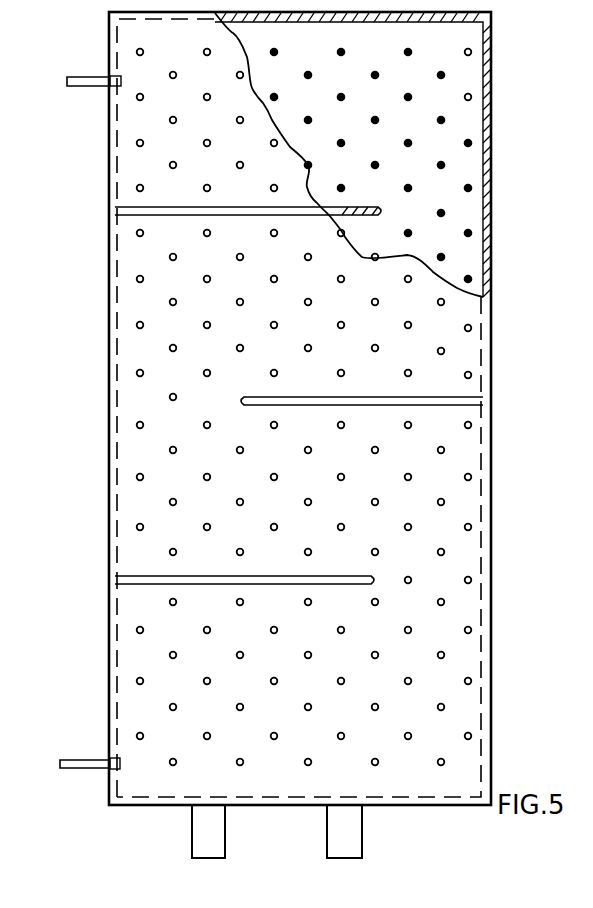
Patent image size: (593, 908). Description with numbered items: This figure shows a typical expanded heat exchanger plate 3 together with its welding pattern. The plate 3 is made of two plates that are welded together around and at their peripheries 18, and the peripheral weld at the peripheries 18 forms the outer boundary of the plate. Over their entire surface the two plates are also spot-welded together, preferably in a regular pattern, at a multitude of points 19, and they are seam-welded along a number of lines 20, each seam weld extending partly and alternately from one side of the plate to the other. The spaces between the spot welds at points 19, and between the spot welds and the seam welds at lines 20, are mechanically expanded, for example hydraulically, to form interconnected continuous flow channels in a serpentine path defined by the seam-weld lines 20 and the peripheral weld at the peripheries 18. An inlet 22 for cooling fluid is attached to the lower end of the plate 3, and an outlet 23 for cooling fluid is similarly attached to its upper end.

The expanded heat exchanger plate 3 is at (514, 143).
The peripheries 18 is at (491, 218).
The points 19 is at (446, 351).
The lines 20 is at (178, 207).
The inlet 22 is at (85, 770).
The outlet 23 is at (86, 87).